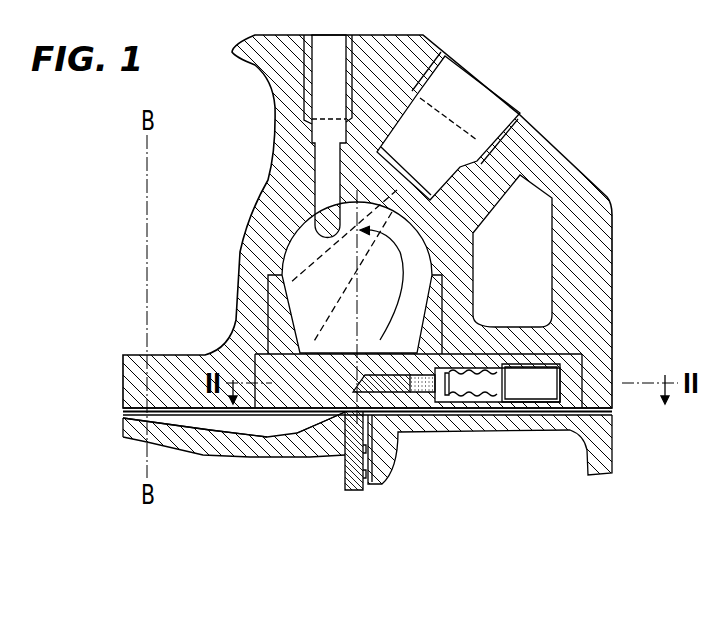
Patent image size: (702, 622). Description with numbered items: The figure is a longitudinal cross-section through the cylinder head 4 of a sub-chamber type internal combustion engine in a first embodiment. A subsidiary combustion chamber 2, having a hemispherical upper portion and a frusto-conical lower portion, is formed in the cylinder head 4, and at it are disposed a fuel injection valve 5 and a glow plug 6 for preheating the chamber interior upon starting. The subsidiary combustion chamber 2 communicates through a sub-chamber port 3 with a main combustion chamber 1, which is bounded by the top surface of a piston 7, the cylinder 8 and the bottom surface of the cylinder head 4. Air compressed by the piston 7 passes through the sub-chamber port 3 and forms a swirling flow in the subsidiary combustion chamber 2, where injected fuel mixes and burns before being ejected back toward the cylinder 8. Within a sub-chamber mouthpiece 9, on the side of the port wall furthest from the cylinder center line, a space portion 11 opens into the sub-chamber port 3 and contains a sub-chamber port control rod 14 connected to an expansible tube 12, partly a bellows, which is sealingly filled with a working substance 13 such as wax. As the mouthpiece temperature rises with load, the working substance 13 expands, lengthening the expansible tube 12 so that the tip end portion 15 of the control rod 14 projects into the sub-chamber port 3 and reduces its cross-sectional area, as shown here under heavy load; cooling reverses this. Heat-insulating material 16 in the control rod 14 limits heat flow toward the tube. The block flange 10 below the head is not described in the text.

The main combustion chamber 1 is at (207, 421).
The subsidiary combustion chamber 2 is at (418, 262).
The sub-chamber port 3 is at (335, 383).
The cylinder head 4 is at (285, 198).
The fuel injection valve 5 is at (478, 102).
The glow plug 6 is at (333, 50).
The piston 7 is at (267, 443).
The cylinder 8 is at (385, 460).
The sub-chamber mouthpiece 9 is at (432, 308).
The block flange 10 is at (610, 412).
The space portion 11 is at (487, 395).
The expansible tube 12 is at (467, 395).
The working substance 13 is at (505, 382).
The sub-chamber port control rod 14 is at (403, 389).
The tip end portion 15 is at (345, 462).
The heat-insulating material 16 is at (432, 393).